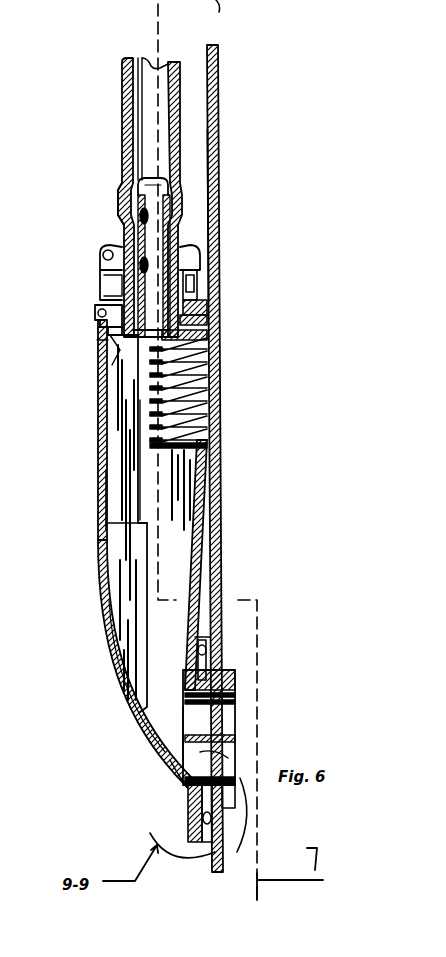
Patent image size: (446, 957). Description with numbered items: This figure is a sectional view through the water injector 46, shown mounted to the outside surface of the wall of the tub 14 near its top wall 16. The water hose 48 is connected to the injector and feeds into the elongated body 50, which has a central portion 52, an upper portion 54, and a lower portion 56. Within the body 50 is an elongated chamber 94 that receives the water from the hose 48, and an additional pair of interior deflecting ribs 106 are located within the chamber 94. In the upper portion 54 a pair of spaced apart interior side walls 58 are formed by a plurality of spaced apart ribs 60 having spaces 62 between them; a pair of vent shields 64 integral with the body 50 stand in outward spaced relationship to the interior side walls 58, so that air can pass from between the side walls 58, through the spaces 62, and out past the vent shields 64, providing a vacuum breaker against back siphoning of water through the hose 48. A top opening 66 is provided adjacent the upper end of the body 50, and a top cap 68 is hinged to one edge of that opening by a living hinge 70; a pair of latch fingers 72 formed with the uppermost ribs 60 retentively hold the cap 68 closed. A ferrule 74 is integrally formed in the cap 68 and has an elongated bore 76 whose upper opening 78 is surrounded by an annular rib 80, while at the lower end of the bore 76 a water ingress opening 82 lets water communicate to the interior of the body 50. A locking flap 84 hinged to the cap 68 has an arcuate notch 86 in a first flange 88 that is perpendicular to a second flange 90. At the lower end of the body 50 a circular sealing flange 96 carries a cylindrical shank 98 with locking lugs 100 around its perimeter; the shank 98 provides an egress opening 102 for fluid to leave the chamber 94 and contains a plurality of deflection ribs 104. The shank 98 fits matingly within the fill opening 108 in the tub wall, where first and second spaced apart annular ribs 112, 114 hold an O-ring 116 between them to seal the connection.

The tub 14 is at (226, 106).
The top wall 16 is at (219, 122).
The water injector 46 is at (85, 377).
The water hose 48 is at (122, 90).
The elongated body 50 is at (100, 462).
The central portion 52 is at (103, 477).
The upper portion 54 is at (98, 352).
The lower portion 56 is at (186, 752).
The interior side walls 58 is at (127, 390).
The ribs 60 is at (230, 376).
The spaces 62 is at (210, 388).
The vent shields 64 is at (201, 288).
The top opening 66 is at (100, 328).
The top cap 68 is at (201, 310).
The living hinge 70 is at (100, 312).
The latch fingers 72 is at (198, 271).
The ferrule 74 is at (121, 205).
The elongated bore 76 is at (121, 220).
The upper opening 78 is at (123, 184).
The annular rib 80 is at (180, 192).
The water ingress opening 82 is at (210, 347).
The locking flap 84 is at (196, 248).
The arcuate notch 86 is at (104, 277).
The first flange 88 is at (101, 258).
The second flange 90 is at (112, 294).
The elongated chamber 94 is at (140, 496).
The circular sealing flange 96 is at (188, 828).
The cylindrical shank 98 is at (236, 712).
The locking lugs 100 is at (235, 667).
The egress opening 102 is at (236, 722).
The deflection ribs 104 is at (183, 710).
The interior deflecting ribs 106 is at (117, 615).
The fill opening 108 is at (233, 695).
The first annular rib 112 is at (170, 857).
The second annular rib 114 is at (143, 815).
The O-ring 116 is at (188, 810).